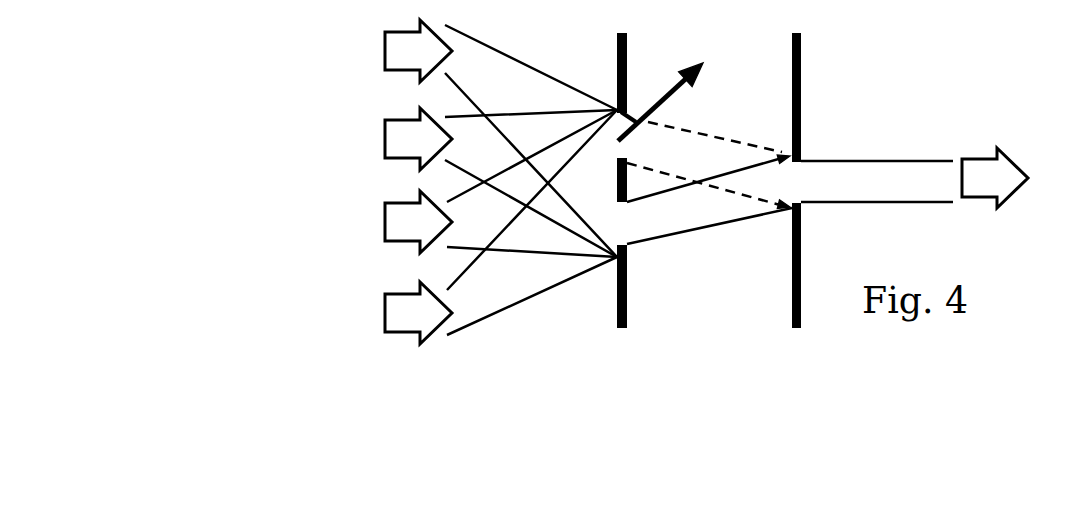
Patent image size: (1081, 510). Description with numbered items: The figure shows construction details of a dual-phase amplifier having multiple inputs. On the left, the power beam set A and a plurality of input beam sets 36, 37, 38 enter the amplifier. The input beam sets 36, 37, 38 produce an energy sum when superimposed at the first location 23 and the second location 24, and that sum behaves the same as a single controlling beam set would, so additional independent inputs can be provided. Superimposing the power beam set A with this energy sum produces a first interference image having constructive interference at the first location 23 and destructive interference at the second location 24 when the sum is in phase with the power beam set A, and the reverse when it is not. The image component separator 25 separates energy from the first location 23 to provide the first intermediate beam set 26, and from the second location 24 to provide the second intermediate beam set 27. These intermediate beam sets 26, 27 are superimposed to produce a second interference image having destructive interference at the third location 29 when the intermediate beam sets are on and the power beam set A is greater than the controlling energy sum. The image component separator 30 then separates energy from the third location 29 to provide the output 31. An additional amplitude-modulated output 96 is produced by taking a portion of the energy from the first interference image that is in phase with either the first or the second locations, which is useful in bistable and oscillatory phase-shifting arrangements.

The input beam set 38 is at (481, 138).
The power beam set A is at (486, 182).
The input beam set 37 is at (482, 183).
The input beam set 36 is at (482, 227).
The image component separator 25 is at (632, 62).
The second location 24 is at (616, 138).
The amplitude-modulated output 96 is at (672, 91).
The second intermediate beam set 27 is at (703, 159).
The first intermediate beam set 26 is at (703, 210).
The first location 23 is at (613, 218).
The image component separator 30 is at (789, 111).
The third location 29 is at (797, 185).
The output 31 is at (1013, 178).